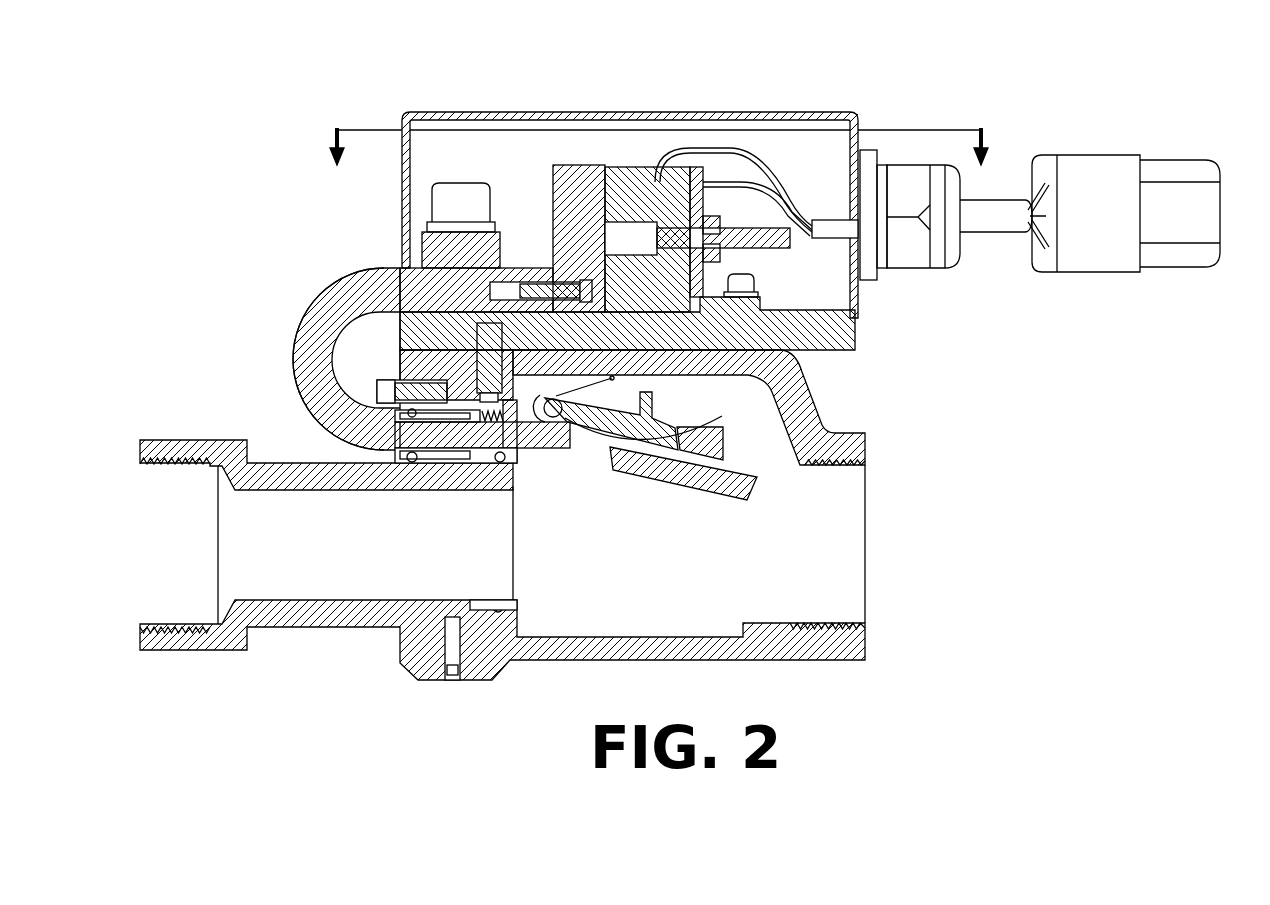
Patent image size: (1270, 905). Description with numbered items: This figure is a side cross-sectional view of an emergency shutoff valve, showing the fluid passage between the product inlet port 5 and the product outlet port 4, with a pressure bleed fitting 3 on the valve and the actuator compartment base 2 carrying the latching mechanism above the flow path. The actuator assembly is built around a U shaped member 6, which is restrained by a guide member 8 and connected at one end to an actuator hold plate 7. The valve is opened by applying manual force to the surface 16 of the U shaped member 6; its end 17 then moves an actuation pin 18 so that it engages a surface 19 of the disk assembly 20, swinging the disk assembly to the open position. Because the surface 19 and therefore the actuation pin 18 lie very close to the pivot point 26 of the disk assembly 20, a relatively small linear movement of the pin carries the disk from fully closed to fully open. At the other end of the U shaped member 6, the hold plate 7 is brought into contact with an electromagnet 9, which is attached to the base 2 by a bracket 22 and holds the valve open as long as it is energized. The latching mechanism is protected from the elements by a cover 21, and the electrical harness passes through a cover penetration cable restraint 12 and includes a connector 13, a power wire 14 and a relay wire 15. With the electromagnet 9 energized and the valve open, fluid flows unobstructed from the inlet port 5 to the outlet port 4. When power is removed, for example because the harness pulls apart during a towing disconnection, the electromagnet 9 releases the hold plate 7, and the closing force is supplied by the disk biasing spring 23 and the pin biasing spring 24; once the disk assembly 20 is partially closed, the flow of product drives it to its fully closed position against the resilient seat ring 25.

The actuator compartment base 2 is at (846, 340).
The pressure bleed fitting 3 is at (657, 164).
The product outlet port 4 is at (158, 552).
The product inlet port 5 is at (862, 566).
The U shaped member 6 is at (330, 292).
The actuator hold plate 7 is at (560, 165).
The guide member 8 is at (480, 246).
The electromagnet 9 is at (622, 167).
The cover penetration cable restraint 12 is at (911, 258).
The connector 13 is at (1090, 170).
The power wire 14 is at (798, 226).
The relay wire 15 is at (734, 147).
The surface 16 is at (293, 352).
The end 17 is at (402, 440).
The actuation pin 18 is at (533, 448).
The surface 19 is at (553, 437).
The disk assembly 20 is at (660, 496).
The cover 21 is at (840, 108).
The bracket 22 is at (757, 303).
The disk biasing spring 23 is at (612, 382).
The pin biasing spring 24 is at (498, 462).
The resilient seat ring 25 is at (507, 610).
The pivot point 26 is at (657, 420).